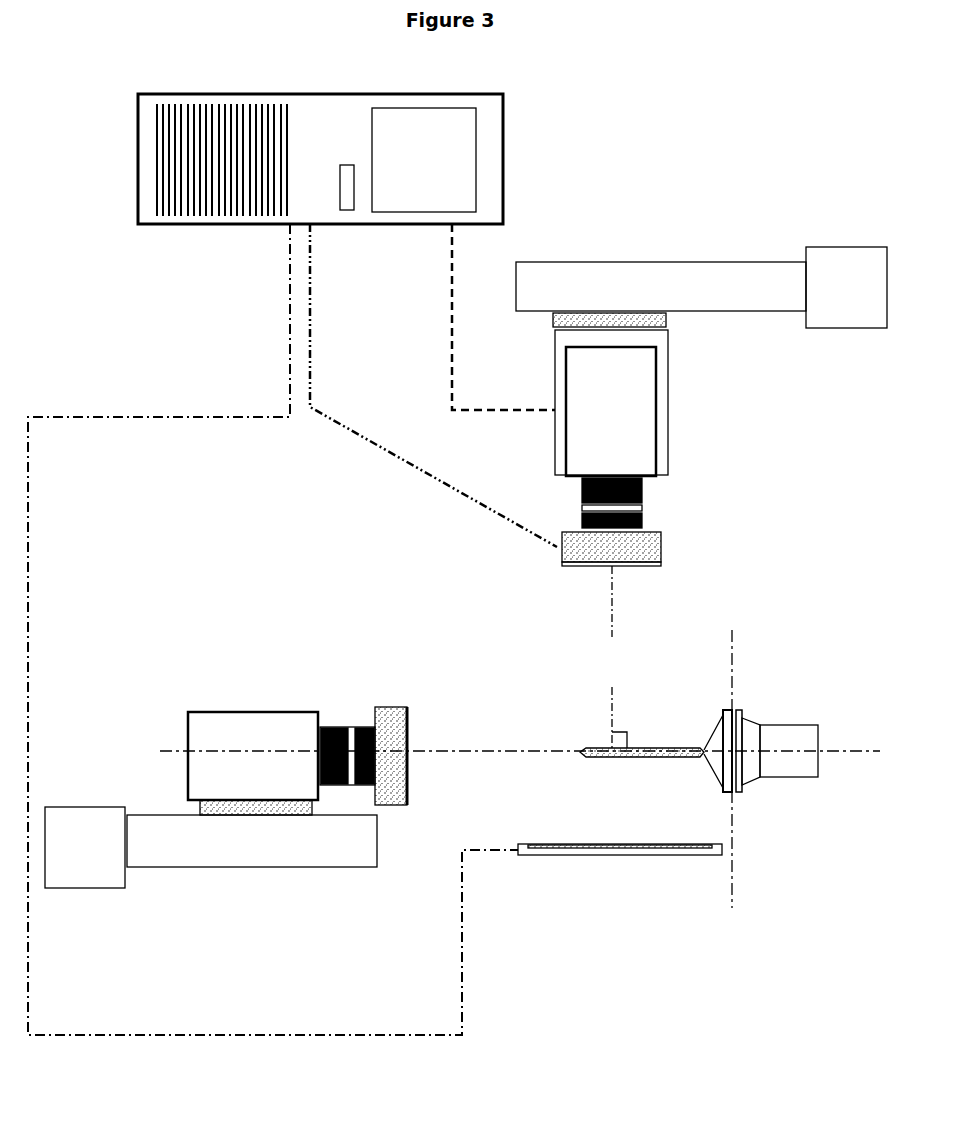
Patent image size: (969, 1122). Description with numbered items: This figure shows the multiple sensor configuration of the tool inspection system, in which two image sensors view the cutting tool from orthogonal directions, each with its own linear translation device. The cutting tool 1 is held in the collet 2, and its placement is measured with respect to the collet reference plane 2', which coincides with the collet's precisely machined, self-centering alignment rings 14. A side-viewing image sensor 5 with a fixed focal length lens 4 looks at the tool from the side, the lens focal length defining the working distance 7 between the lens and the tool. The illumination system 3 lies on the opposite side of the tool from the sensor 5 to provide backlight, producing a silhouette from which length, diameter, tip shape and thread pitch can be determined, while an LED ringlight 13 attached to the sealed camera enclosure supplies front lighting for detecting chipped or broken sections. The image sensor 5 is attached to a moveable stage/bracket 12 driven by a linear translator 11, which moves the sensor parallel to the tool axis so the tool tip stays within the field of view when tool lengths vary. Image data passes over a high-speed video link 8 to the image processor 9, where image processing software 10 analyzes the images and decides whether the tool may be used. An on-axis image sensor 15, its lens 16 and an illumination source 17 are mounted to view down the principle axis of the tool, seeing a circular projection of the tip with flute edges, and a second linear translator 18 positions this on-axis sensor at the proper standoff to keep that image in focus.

The cutting tool 1 is at (580, 750).
The collet 2 is at (812, 709).
The collet reference plane 2' is at (730, 744).
The illumination system 3 is at (722, 849).
The lens 4 is at (645, 490).
The image sensor 5 is at (650, 410).
The working distance 7 is at (612, 657).
The high-speed video link 8 is at (452, 308).
The image processor 9 is at (275, 224).
The image processing software 10 is at (225, 298).
The linear translator 11 is at (830, 260).
The moveable stage/bracket 12 is at (667, 320).
The LED ringlight 13 is at (562, 560).
The alignment rings 14 is at (738, 716).
The on-axis image sensor 15 is at (287, 712).
The lens 16 is at (347, 727).
The illumination source 17 is at (393, 707).
The linear translator 18 is at (303, 865).